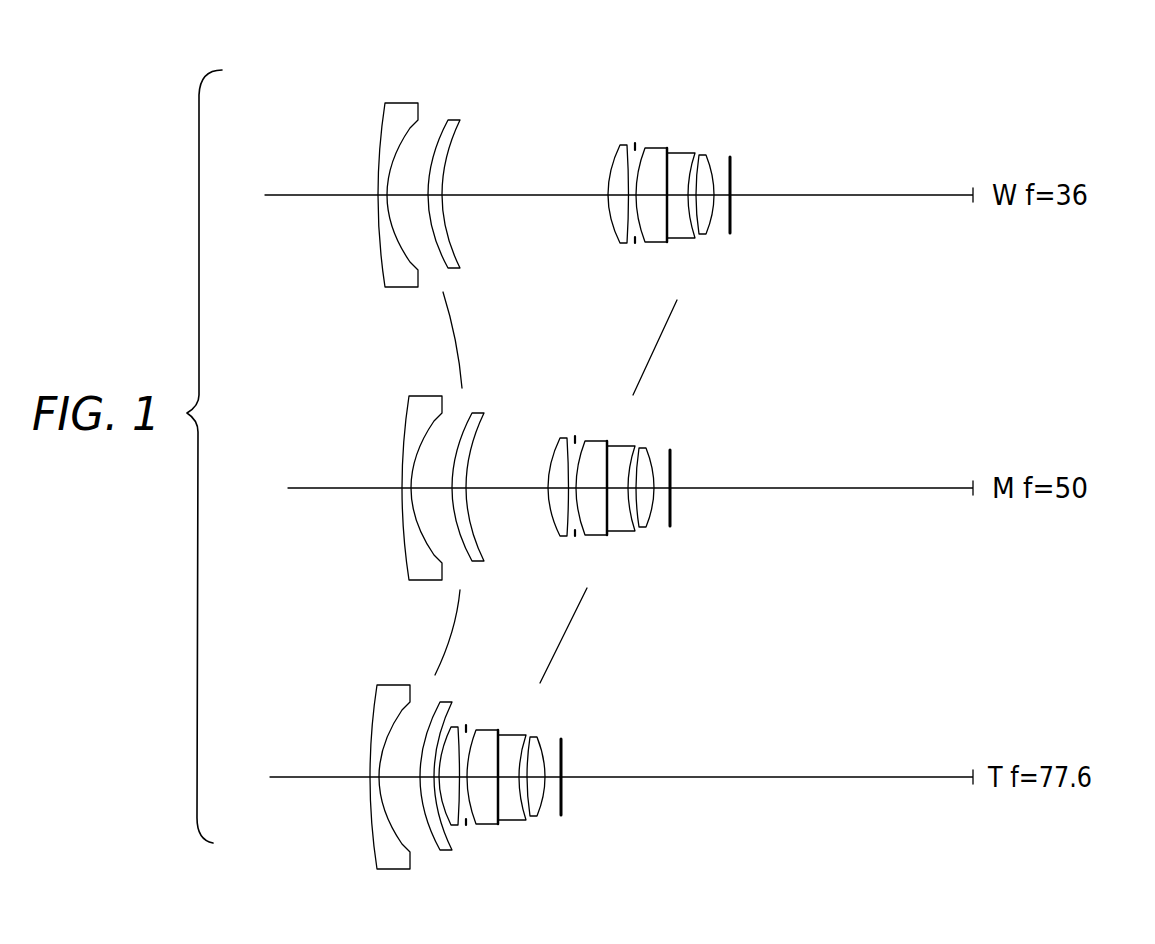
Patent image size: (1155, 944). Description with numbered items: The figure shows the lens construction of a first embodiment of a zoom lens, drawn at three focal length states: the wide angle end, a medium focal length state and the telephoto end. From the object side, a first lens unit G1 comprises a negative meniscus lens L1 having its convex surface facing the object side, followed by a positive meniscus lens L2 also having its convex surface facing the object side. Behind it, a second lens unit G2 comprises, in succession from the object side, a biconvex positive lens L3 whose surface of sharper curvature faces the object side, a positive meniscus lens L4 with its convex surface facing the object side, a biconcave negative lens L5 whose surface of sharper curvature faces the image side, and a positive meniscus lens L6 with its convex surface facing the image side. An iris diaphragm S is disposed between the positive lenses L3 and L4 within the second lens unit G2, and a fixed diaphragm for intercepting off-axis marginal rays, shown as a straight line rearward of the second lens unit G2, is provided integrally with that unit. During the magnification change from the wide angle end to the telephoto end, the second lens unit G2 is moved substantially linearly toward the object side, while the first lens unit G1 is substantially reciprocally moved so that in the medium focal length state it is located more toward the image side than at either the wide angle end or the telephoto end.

The first lens unit G1 is at (482, 68).
The second lens unit G2 is at (755, 90).
The negative meniscus lens L1 is at (403, 104).
The positive meniscus lens L2 is at (456, 120).
The biconvex positive lens L3 is at (617, 145).
The positive meniscus lens L4 is at (652, 148).
The biconcave negative lens L5 is at (680, 153).
The positive meniscus lens L6 is at (702, 156).
The iris diaphragm S is at (635, 248).